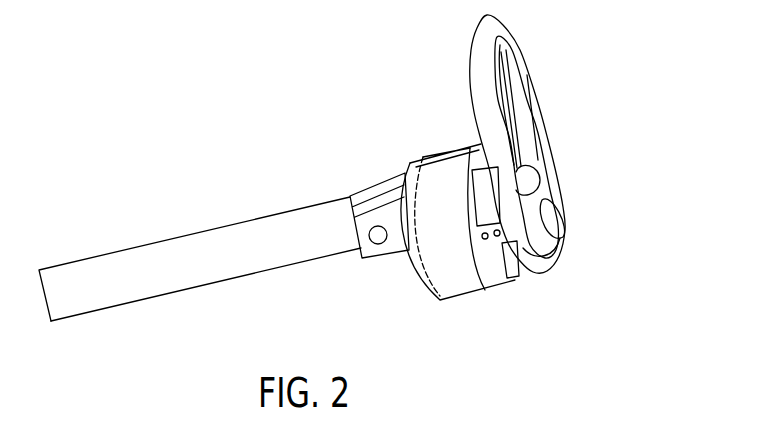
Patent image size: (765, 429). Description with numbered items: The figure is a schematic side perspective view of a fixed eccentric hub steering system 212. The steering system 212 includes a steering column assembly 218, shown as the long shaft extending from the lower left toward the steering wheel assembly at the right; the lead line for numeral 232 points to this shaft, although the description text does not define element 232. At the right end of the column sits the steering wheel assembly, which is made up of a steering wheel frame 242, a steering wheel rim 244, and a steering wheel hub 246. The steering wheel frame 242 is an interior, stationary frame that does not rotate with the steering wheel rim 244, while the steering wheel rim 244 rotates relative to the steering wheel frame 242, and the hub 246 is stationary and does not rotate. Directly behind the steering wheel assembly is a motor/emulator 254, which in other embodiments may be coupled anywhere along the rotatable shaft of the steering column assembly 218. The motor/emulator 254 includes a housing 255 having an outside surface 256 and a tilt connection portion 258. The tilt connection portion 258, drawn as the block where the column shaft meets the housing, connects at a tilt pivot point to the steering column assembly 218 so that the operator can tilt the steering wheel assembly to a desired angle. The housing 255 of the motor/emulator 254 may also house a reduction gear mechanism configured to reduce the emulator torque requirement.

The fixed eccentric hub steering system 212 is at (140, 221).
The steering column assembly 218 is at (145, 320).
The shaft tube portion 232 is at (200, 273).
The steering wheel frame 242 is at (518, 103).
The steering wheel rim 244 is at (473, 67).
The steering wheel hub 246 is at (563, 206).
The motor/emulator 254 is at (396, 279).
The housing 255 is at (433, 172).
The outside surface 256 is at (451, 271).
The tilt connection portion 258 is at (393, 221).